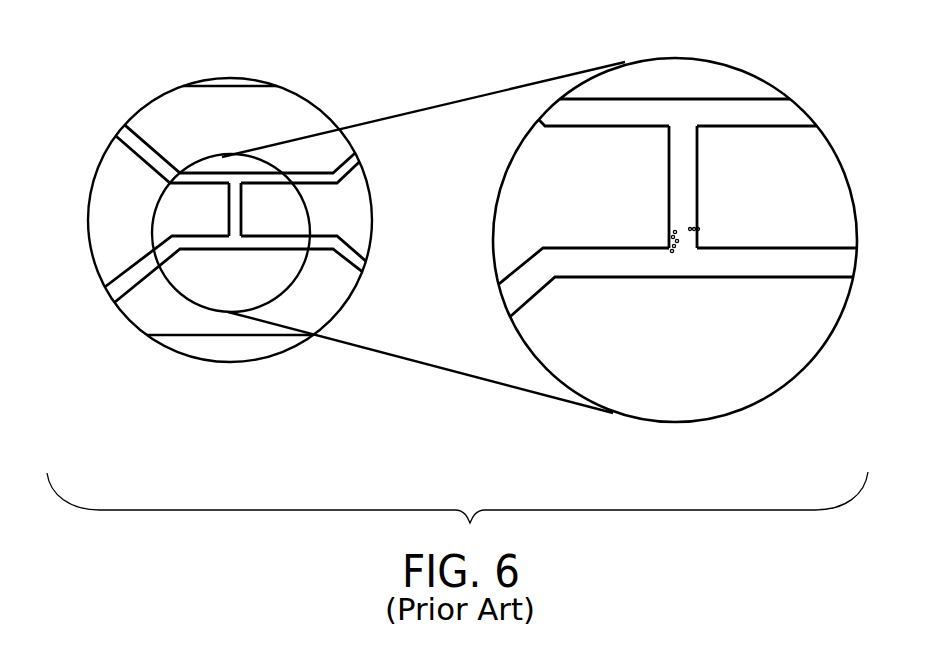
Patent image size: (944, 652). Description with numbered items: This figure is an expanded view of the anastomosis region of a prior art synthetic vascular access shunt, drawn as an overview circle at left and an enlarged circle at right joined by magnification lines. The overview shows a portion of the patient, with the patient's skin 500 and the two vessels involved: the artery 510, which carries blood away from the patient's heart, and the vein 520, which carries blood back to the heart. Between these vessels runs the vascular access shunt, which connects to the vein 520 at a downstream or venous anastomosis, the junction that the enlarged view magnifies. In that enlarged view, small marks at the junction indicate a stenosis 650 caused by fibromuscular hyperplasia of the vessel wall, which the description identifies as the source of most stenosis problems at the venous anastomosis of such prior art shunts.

The skin 500 is at (255, 379).
The artery 510 is at (141, 145).
The vein 520 is at (110, 298).
The stenosis 650 is at (687, 257).